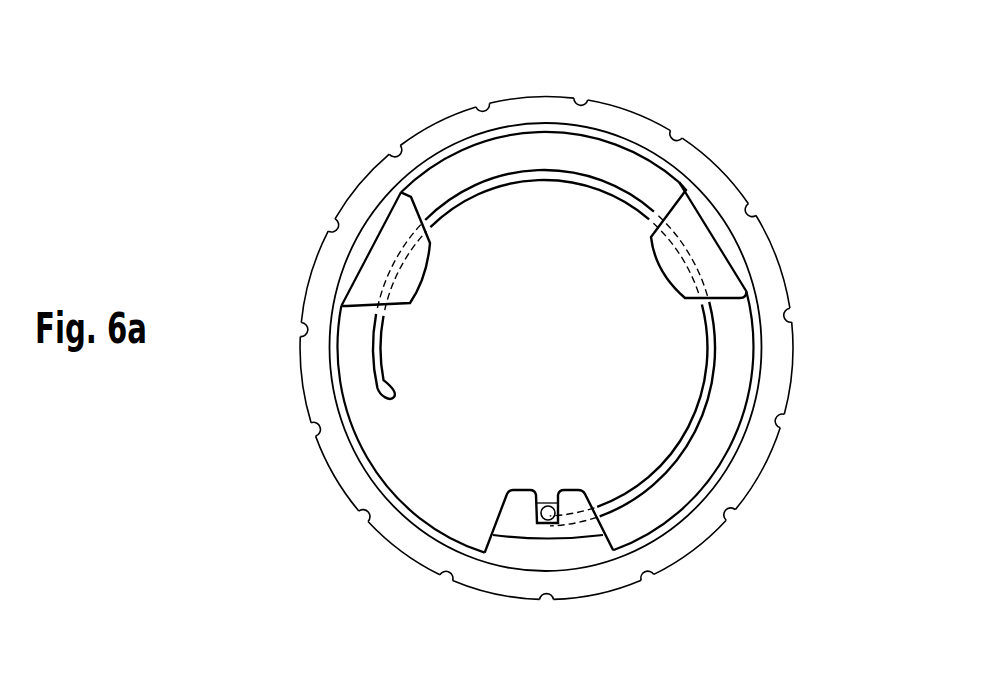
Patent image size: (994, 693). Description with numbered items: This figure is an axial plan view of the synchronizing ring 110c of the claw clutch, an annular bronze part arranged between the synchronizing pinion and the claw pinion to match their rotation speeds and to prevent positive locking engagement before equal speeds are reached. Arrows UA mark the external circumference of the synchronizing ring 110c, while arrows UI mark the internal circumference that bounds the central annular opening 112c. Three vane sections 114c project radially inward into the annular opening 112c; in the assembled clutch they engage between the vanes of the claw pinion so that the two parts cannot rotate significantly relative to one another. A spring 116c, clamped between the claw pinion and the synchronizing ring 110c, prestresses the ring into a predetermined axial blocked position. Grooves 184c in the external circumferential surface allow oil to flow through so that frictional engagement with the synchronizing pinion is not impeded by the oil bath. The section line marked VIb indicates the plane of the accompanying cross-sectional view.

The synchronizing ring 110c is at (689, 537).
The annular opening 112c is at (522, 514).
The vane sections 114c is at (388, 258).
The spring 116c is at (707, 383).
The grooves 184c is at (584, 95).
The external circumference arrows UA is at (436, 121).
The internal circumference arrows UI is at (527, 137).
The section line VIb is at (572, 27).